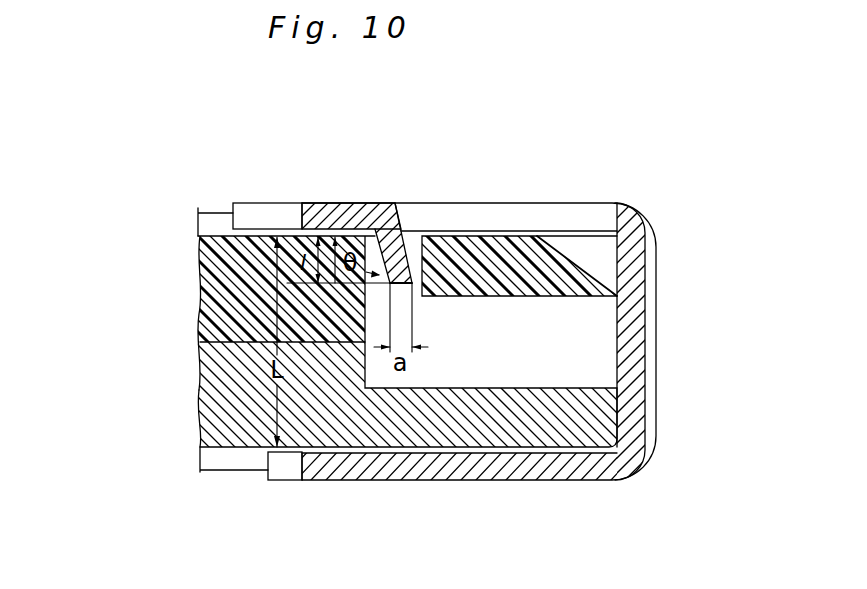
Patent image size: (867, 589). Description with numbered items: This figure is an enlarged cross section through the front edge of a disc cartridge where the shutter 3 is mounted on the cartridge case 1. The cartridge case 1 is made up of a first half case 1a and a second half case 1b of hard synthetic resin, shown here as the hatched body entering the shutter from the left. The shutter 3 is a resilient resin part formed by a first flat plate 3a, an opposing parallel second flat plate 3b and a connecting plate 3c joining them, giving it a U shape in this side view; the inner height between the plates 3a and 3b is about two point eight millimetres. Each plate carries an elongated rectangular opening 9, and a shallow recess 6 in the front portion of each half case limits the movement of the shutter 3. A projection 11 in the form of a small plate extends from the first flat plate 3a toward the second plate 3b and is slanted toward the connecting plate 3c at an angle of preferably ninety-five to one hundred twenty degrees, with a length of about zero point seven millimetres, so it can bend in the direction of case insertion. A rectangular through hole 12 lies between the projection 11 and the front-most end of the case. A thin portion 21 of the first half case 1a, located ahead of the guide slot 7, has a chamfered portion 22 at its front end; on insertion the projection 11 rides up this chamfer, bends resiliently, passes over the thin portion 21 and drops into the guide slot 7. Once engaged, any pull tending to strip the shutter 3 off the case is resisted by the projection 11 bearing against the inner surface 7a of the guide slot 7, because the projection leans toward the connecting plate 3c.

The cartridge case 1 is at (107, 285).
The first half case 1a is at (200, 312).
The second half case 1b is at (203, 370).
The shutter 3 is at (467, 473).
The first flat plate 3a is at (342, 215).
The second flat plate 3b is at (347, 468).
The connecting plate 3c is at (637, 340).
The shallow recess 6 is at (210, 215).
The guide slot 7 is at (413, 243).
The inner surface of guide slot 7a is at (422, 288).
The elongated rectangular opening 9 is at (270, 213).
The projection 11 is at (440, 252).
The through hole 12 is at (553, 218).
The thin portion 21 is at (502, 253).
The chamfered portion 22 is at (570, 255).